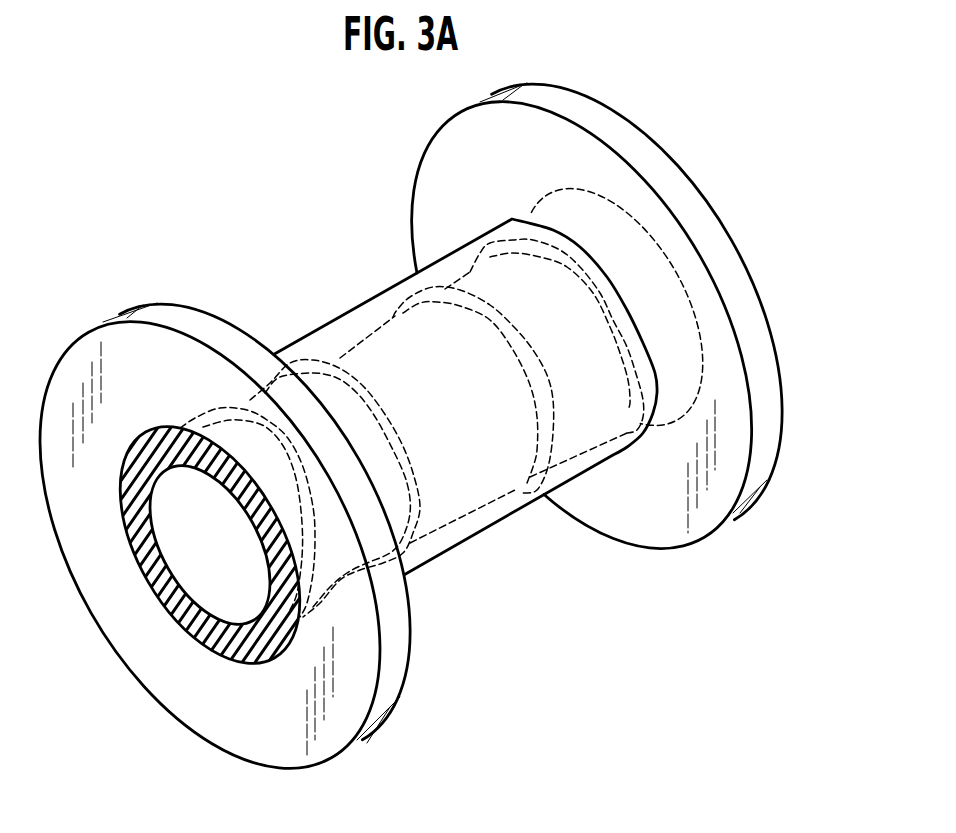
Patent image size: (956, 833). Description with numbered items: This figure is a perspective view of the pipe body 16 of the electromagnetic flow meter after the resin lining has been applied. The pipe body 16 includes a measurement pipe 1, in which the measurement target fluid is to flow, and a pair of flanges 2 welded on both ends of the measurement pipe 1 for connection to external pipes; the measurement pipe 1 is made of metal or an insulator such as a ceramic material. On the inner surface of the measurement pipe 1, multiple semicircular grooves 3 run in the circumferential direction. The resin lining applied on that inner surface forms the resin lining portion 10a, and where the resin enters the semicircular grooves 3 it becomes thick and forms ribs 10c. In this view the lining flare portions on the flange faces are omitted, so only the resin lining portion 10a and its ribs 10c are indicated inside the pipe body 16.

The measurement pipe 1 is at (427, 560).
The flange 2 is at (767, 477).
The semicircular groove 3 is at (507, 497).
The resin lining portion 10a is at (222, 650).
The rib 10c is at (340, 362).
The pipe body 16 is at (300, 262).